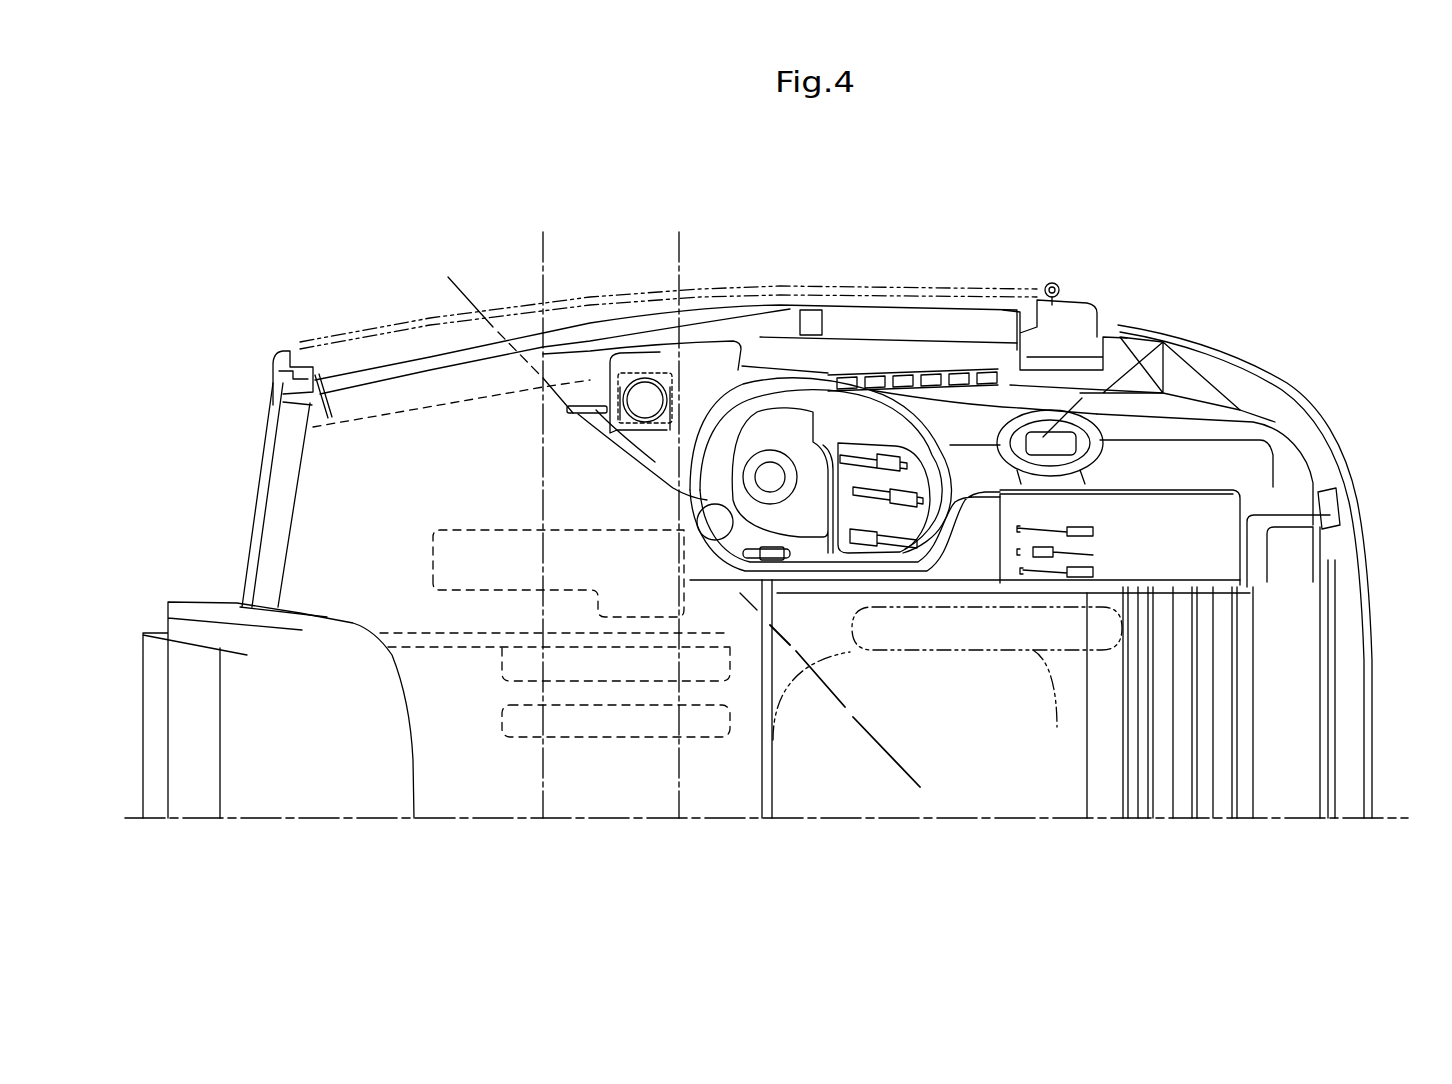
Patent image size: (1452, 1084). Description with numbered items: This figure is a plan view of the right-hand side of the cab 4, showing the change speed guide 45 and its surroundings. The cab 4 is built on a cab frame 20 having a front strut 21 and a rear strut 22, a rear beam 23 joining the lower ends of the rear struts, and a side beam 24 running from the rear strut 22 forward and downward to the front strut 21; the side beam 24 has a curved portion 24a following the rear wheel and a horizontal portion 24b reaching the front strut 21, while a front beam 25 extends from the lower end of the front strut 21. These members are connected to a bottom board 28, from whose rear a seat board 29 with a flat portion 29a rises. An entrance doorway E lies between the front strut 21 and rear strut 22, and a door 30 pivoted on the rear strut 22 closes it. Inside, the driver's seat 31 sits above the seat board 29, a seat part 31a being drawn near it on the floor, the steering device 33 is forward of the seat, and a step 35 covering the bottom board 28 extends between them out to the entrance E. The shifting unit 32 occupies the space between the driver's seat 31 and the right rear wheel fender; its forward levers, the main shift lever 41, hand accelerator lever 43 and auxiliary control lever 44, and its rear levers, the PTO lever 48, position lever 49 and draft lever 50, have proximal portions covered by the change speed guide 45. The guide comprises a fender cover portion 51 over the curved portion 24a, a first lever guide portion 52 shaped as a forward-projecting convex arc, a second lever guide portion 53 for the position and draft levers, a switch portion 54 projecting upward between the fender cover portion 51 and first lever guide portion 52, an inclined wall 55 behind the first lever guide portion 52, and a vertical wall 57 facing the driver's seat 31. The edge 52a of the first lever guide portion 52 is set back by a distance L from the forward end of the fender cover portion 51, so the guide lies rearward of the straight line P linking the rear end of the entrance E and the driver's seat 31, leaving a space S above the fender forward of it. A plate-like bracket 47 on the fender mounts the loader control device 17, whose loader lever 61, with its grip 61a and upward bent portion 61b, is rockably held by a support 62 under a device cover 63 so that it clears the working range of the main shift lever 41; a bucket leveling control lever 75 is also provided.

The cab 4 is at (1302, 833).
The loader control device 17 is at (601, 497).
The cab frame 20 is at (1312, 301).
The front strut 21 is at (278, 357).
The rear strut 22 is at (1073, 312).
The rear beam 23 is at (1352, 667).
The side beam 24 is at (835, 303).
The curved portion 24a is at (812, 318).
The horizontal portion 24b is at (366, 377).
The front beam 25 is at (275, 487).
The bottom board 28 is at (773, 650).
The seat board 29 is at (845, 793).
The flat portion 29a is at (907, 793).
The door 30 is at (318, 337).
The driver's seat 31 is at (1160, 650).
The floor panel edge 31a is at (950, 643).
The shifting unit 32 is at (1136, 460).
The steering device 33 is at (378, 792).
The step 35 is at (422, 388).
The main shift lever 41 is at (770, 477).
The hand accelerator lever 43 is at (733, 548).
The auxiliary control lever 44 is at (866, 548).
The change speed guide 45 is at (1226, 462).
The plate-like bracket 47 is at (713, 410).
The PTO lever 48 is at (1137, 433).
The position lever 49 is at (1340, 495).
The draft lever 50 is at (1100, 570).
The fender cover portion 51 is at (585, 388).
The first lever guide portion 52 is at (817, 440).
The edge 52a is at (703, 490).
The second lever guide portion 53 is at (1167, 547).
The switch portion 54 is at (1050, 289).
The inclined wall 55 is at (1193, 418).
The vertical wall 57 is at (937, 536).
The loader lever 61 is at (782, 560).
The grip 61a is at (742, 517).
The bent portion 61b is at (660, 432).
The support 62 is at (640, 430).
The device cover 63 is at (640, 432).
The bucket leveling control lever 75 is at (583, 420).
The entrance doorway E is at (430, 258).
The space S is at (598, 372).
The straight line P is at (470, 293).
The distance L is at (676, 244).